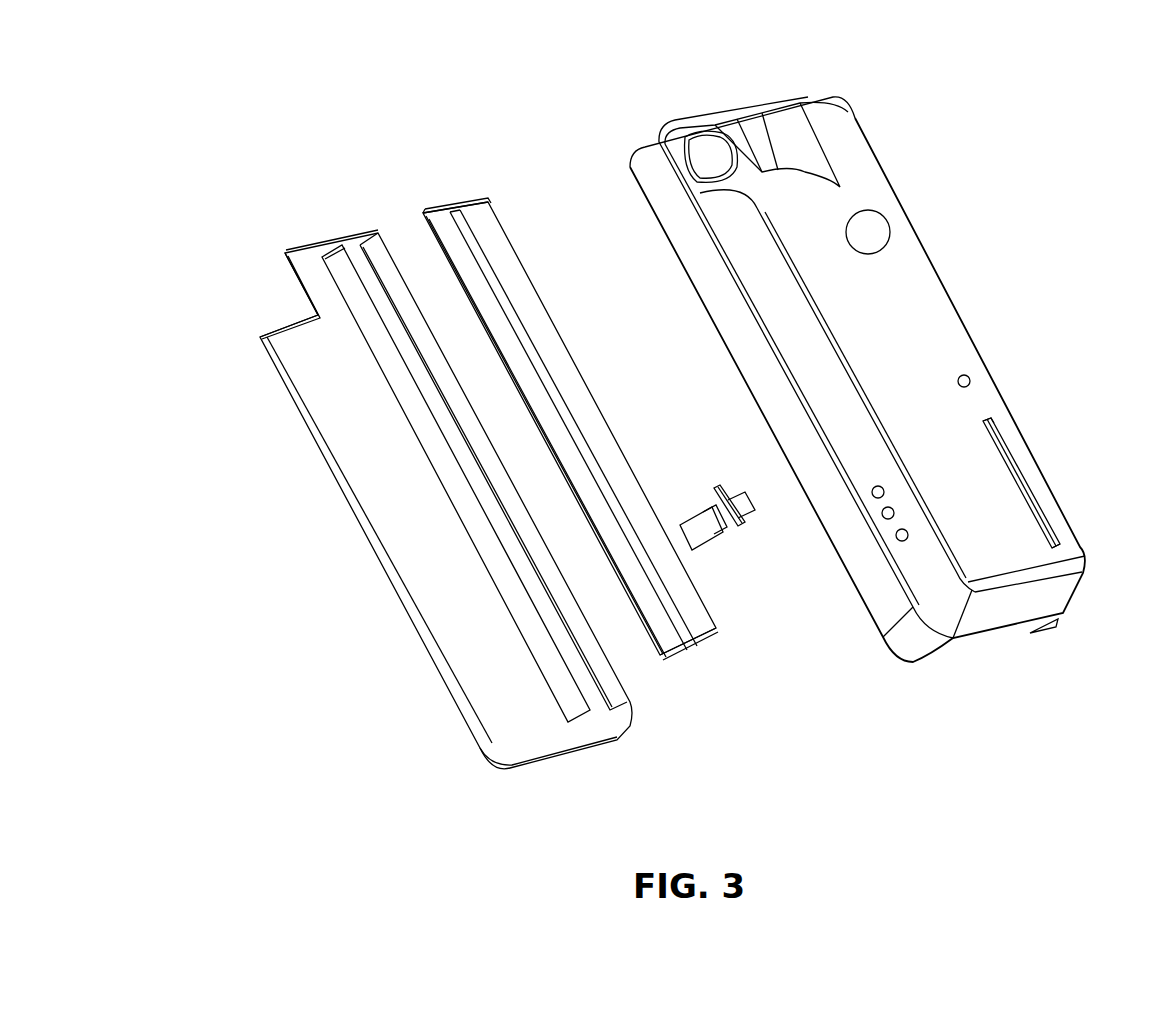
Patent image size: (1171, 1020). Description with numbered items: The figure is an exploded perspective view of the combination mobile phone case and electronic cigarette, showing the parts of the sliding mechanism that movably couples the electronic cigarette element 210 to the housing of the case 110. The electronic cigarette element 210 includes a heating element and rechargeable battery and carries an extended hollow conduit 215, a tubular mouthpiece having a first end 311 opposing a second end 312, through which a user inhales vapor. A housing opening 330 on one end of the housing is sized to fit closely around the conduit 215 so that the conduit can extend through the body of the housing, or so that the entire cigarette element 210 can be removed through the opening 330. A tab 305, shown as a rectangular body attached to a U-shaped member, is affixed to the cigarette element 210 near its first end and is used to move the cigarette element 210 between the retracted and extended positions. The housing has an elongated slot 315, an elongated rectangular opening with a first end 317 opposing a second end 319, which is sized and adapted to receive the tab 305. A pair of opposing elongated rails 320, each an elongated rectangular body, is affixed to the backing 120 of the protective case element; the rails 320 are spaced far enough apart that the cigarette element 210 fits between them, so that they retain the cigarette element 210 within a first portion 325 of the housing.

The case 110 is at (460, 107).
The backing 120 is at (443, 471).
The electronic cigarette element 210 is at (618, 404).
The conduit 215 is at (520, 207).
The tab 305 is at (753, 527).
The first end 311 is at (722, 628).
The second end 312 is at (490, 200).
The elongated slot 315 is at (1033, 496).
The first end 317 is at (1062, 544).
The second end 319 is at (999, 426).
The elongated rails 320 is at (372, 247).
The first portion 325 is at (312, 260).
The housing opening 330 is at (808, 99).